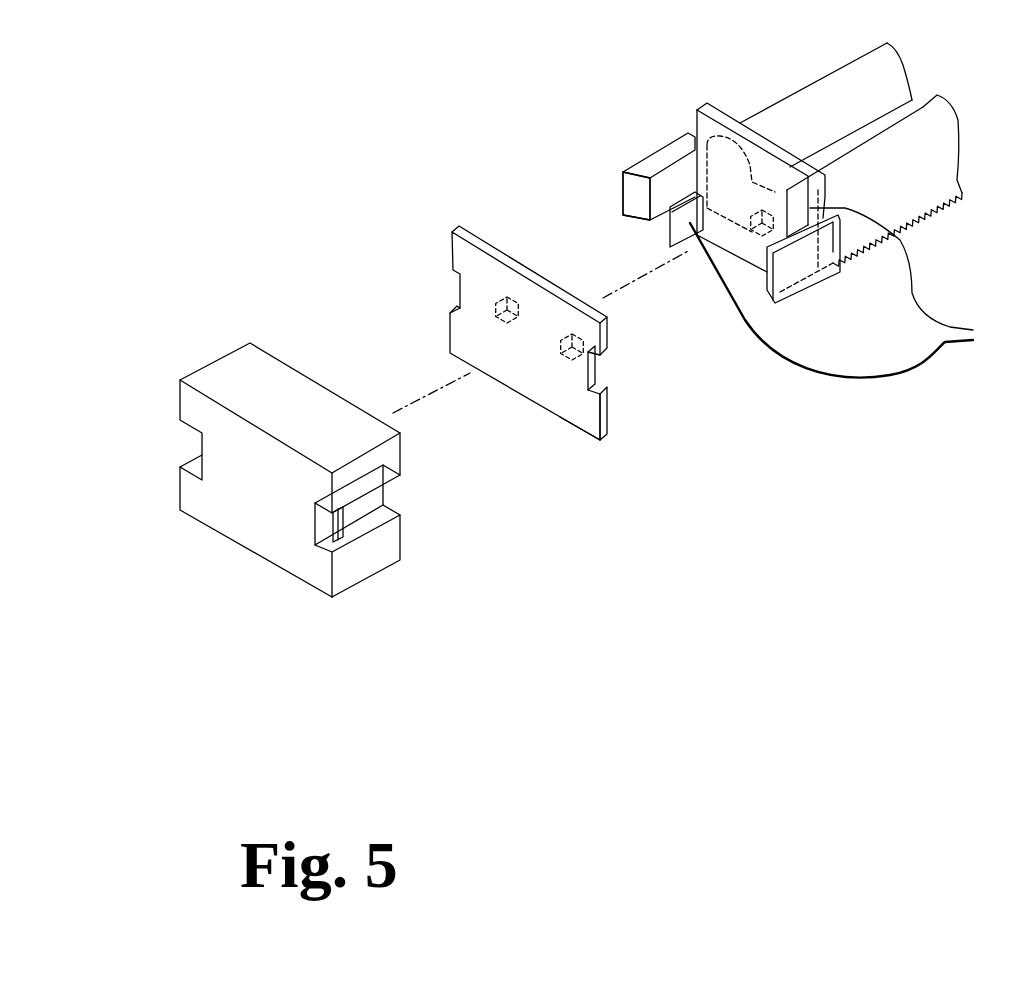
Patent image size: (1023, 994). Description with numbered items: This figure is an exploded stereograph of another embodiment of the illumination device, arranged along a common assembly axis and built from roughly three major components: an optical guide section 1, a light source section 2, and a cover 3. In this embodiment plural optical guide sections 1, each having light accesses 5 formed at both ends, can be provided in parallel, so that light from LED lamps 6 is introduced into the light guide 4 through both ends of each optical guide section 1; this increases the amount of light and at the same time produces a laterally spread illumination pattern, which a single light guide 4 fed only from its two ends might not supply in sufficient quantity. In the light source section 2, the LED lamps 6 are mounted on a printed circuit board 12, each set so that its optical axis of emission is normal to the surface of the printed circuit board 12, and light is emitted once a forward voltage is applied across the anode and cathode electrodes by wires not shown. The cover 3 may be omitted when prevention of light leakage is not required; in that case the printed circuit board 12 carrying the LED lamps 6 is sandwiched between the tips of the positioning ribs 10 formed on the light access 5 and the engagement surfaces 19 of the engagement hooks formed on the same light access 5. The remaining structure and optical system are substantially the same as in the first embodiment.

The optical guide section 1 is at (732, 64).
The light source section 2 is at (528, 308).
The cover 3 is at (255, 326).
The light guide 4 is at (818, 72).
The light access 5 is at (656, 125).
The LED lamp 6 is at (516, 298).
The positioning rib 10 is at (848, 300).
The printed circuit board 12 is at (577, 417).
The engagement surface 19 is at (662, 163).